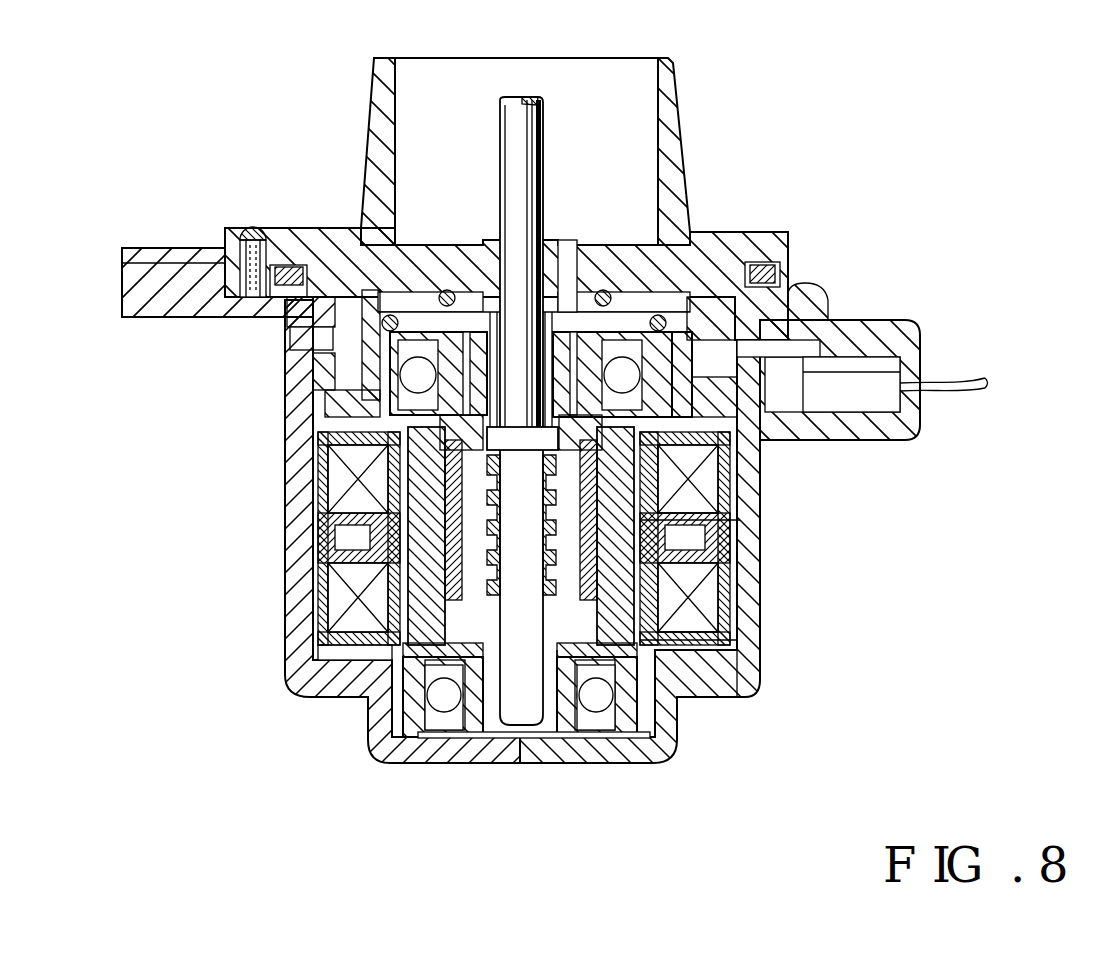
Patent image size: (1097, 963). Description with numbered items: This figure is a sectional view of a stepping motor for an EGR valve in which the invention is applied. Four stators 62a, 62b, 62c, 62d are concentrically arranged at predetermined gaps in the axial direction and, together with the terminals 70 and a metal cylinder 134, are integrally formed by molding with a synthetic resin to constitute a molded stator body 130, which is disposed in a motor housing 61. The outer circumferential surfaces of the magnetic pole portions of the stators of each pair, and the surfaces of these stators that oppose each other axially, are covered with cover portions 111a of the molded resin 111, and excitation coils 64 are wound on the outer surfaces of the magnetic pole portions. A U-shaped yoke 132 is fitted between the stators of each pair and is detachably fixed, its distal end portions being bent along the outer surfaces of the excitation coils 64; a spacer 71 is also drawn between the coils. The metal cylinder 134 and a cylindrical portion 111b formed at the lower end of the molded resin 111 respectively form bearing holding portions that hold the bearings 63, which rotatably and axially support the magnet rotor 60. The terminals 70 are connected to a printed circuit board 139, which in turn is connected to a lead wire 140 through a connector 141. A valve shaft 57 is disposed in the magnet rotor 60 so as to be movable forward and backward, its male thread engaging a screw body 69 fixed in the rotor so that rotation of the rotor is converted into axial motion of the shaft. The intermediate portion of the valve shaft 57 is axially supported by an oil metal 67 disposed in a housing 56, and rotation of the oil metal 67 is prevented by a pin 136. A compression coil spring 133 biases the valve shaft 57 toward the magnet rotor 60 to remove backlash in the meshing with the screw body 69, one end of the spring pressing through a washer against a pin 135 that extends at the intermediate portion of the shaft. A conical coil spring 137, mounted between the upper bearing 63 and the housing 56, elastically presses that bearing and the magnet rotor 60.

The housing 56 is at (373, 103).
The valve shaft 57 is at (543, 150).
The magnet rotor 60 is at (423, 620).
The motor housing 61 is at (122, 272).
The stator 62a is at (730, 447).
The stator 62b is at (660, 490).
The stator 62c is at (660, 600).
The stator 62d is at (725, 648).
The bearing 63 is at (420, 345).
The excitation coil 64 is at (345, 500).
The oil metal 67 is at (490, 300).
The screw body 69 is at (565, 620).
The terminal 70 is at (703, 317).
The coil spacer 71 is at (700, 530).
The molded resin 111 is at (705, 663).
The cover portion 111a is at (740, 520).
The cylindrical portion 111b is at (643, 740).
The molded stator body 130 is at (733, 487).
The yoke 132 is at (340, 452).
The compression coil spring 133 is at (468, 290).
The metal cylinder 134 is at (345, 240).
The pin 135 is at (483, 430).
The pin 136 is at (567, 250).
The conical coil spring 137 is at (675, 305).
The printed circuit board 139 is at (833, 353).
The lead wire 140 is at (967, 393).
The connector 141 is at (885, 377).